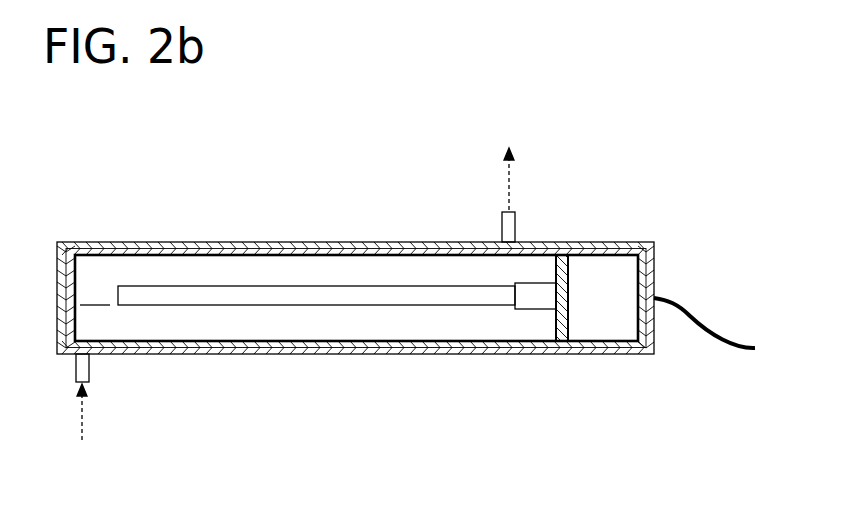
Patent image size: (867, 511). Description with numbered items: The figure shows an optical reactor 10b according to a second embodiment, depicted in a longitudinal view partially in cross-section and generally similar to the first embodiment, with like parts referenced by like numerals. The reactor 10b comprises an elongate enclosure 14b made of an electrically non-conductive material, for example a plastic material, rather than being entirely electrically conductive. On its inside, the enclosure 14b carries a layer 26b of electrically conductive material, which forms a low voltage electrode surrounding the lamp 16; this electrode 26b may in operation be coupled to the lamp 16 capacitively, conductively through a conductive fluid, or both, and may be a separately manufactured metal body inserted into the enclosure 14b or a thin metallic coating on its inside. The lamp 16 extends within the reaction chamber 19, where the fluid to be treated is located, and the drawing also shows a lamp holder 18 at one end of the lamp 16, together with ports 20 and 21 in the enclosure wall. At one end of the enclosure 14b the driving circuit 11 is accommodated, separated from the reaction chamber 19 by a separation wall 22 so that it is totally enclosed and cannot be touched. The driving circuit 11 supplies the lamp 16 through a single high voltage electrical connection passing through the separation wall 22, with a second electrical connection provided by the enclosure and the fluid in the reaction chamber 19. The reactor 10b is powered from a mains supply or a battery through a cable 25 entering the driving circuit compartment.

The optical reactor 10b is at (123, 180).
The elongate enclosure 14b is at (193, 241).
The electrically conductive layer 26b is at (367, 267).
The reaction chamber 19 is at (95, 295).
The lamp 16 is at (302, 289).
The lamp holder 18 is at (532, 302).
The separation wall 22 is at (560, 324).
The driving circuit 11 is at (609, 299).
The outlet port 21 is at (507, 230).
The inlet port 20 is at (90, 372).
The cable 25 is at (685, 312).